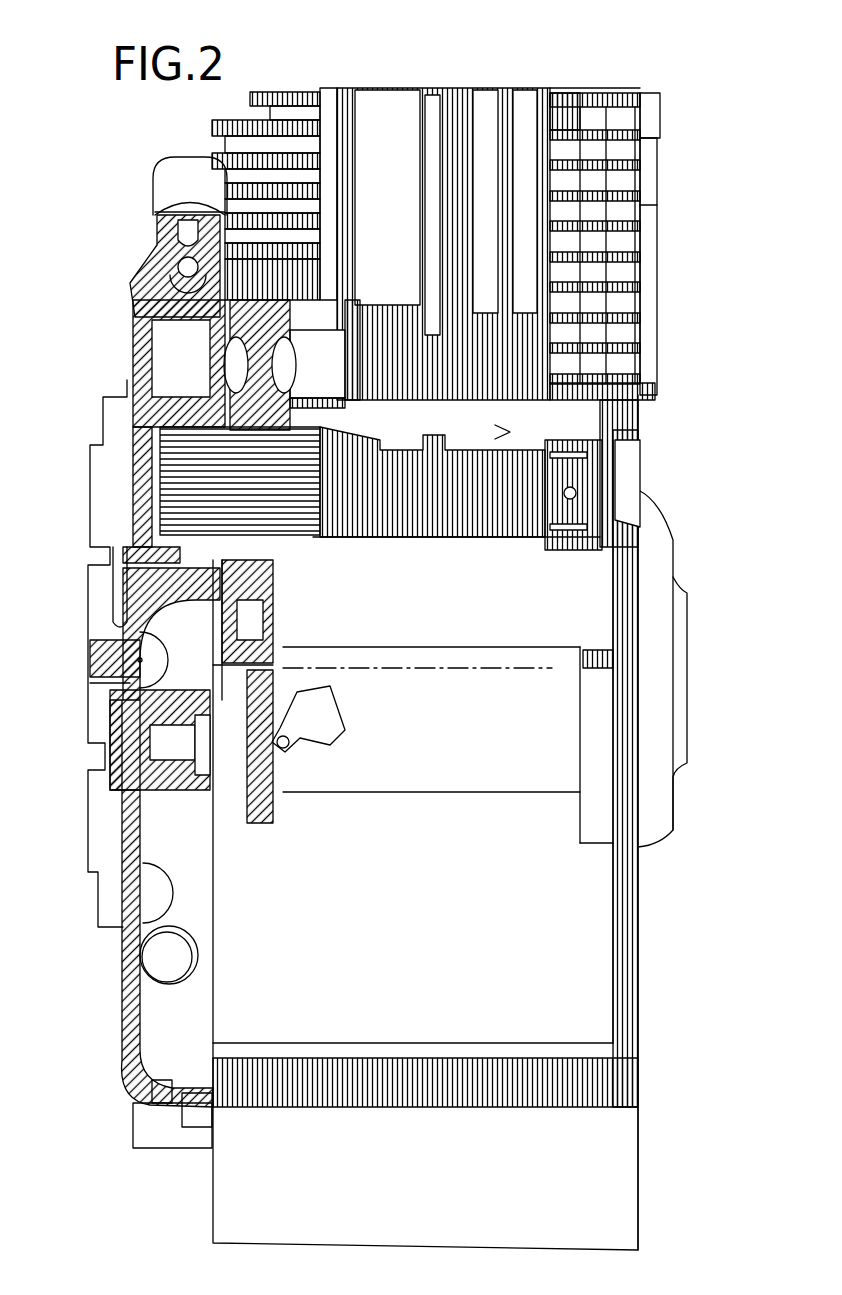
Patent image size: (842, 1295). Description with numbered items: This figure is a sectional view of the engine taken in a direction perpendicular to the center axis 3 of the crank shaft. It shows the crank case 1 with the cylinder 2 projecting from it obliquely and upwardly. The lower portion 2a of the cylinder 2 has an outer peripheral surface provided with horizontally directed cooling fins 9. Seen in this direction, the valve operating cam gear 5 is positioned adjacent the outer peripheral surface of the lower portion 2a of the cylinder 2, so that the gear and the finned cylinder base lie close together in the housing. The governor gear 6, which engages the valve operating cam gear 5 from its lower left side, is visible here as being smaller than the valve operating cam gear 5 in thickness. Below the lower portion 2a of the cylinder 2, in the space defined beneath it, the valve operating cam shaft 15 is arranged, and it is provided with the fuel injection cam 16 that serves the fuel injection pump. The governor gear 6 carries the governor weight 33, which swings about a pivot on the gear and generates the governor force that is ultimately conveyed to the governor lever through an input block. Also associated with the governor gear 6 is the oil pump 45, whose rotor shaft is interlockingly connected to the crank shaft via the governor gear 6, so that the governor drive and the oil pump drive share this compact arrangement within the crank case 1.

The crank case 1 is at (640, 979).
The cylinder 2 is at (290, 148).
The lower portion of the cylinder 2a is at (313, 360).
The center axis of the crank shaft 3 is at (521, 668).
The valve operating cam gear 5 is at (243, 317).
The governor gear 6 is at (262, 823).
The cooling fins 9 is at (313, 420).
The valve operating cam shaft 15 is at (334, 525).
The fuel injection cam 16 is at (470, 470).
The governor weight 33 is at (338, 703).
The oil pump 45 is at (190, 800).